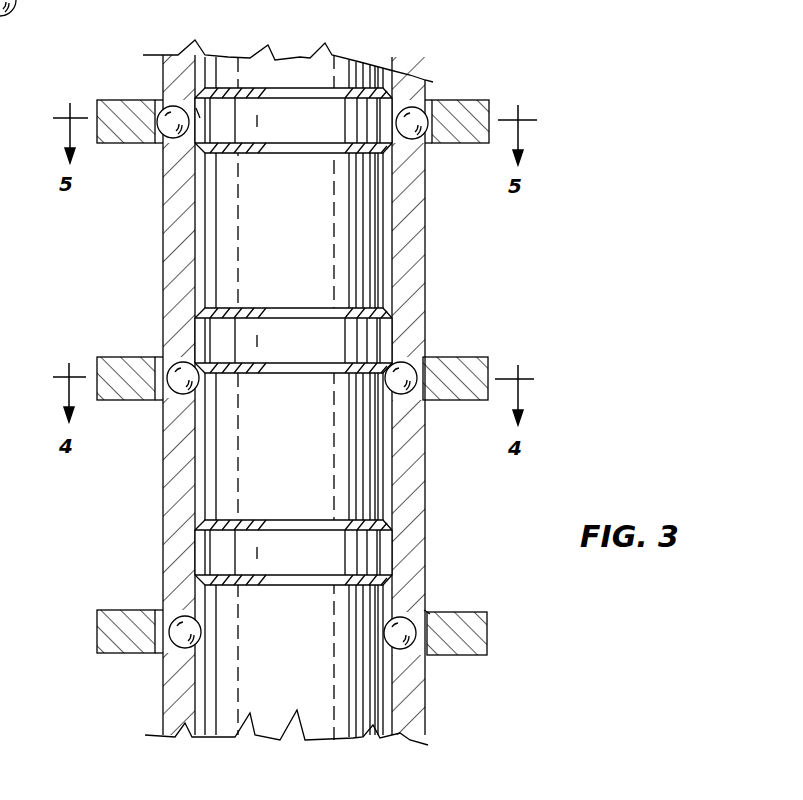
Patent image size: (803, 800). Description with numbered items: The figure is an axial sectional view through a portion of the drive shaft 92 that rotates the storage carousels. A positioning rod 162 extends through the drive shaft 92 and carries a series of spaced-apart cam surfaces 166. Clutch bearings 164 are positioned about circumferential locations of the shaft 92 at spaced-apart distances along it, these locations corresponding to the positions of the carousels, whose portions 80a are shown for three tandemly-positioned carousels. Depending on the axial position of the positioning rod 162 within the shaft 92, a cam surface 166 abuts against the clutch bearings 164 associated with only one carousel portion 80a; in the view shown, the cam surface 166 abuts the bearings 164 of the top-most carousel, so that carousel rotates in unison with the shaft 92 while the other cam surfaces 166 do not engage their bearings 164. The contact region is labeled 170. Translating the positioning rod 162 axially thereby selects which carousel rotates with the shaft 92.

The drive shaft 92 is at (178, 57).
The positioning rod 162 is at (287, 73).
The cam surfaces 166 is at (203, 88).
The clutch bearings 164 is at (168, 132).
The carousel portions 80a is at (113, 103).
The contact point 170 is at (200, 118).